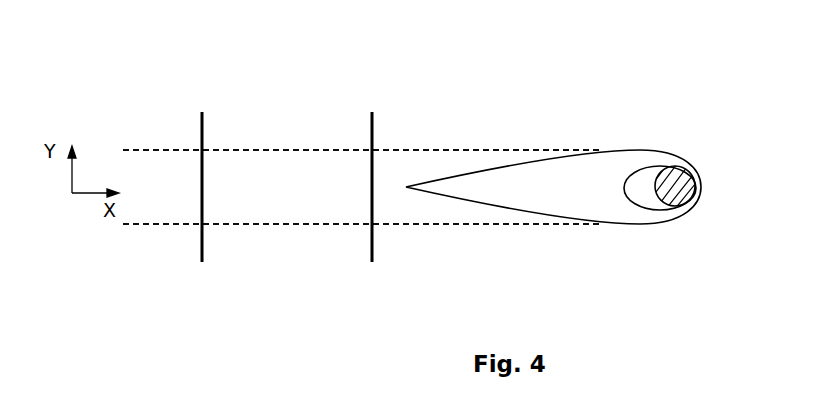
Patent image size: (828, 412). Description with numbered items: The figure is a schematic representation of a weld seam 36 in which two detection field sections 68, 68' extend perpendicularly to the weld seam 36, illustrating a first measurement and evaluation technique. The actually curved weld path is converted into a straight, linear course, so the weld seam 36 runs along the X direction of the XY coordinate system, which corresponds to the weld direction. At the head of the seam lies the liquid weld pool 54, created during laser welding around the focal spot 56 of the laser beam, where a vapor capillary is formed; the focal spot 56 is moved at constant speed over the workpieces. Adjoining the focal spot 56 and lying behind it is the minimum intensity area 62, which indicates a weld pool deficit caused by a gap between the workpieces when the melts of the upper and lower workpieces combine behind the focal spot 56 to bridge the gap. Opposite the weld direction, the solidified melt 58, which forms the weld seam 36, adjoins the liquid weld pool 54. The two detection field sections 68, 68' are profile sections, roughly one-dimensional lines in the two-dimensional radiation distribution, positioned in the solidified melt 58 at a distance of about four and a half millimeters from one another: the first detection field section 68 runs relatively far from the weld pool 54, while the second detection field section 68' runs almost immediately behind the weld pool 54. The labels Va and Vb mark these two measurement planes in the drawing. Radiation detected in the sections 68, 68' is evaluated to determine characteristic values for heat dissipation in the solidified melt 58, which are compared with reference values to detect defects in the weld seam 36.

The weld seam 36 is at (309, 150).
The solidified melt 58 is at (273, 165).
The first detection field section 68 is at (169, 175).
The second detection field section 68' is at (411, 181).
The liquid weld pool 54 is at (622, 160).
The focal spot 56 is at (676, 180).
The minimum intensity area 62 is at (642, 198).
The velocity at plane a Va is at (200, 240).
The velocity at plane b Vb is at (374, 240).